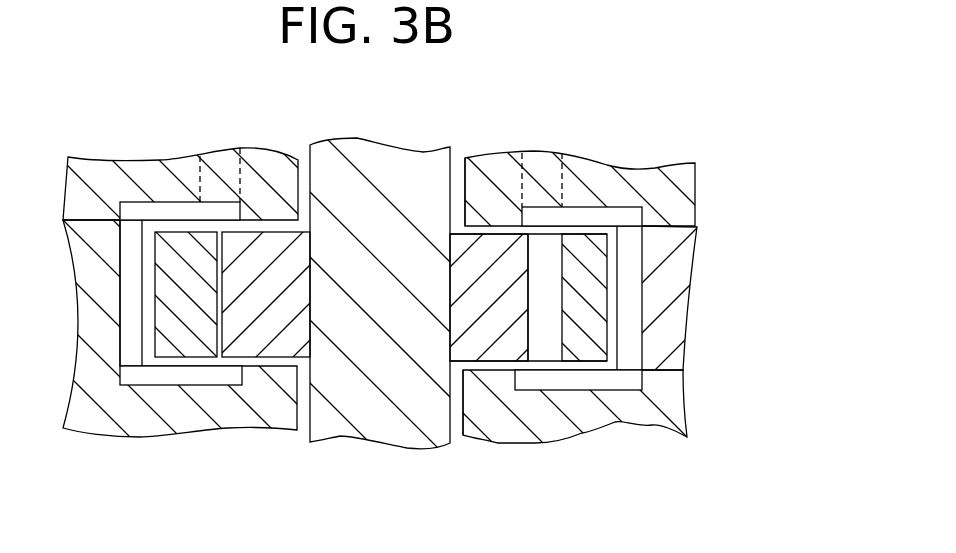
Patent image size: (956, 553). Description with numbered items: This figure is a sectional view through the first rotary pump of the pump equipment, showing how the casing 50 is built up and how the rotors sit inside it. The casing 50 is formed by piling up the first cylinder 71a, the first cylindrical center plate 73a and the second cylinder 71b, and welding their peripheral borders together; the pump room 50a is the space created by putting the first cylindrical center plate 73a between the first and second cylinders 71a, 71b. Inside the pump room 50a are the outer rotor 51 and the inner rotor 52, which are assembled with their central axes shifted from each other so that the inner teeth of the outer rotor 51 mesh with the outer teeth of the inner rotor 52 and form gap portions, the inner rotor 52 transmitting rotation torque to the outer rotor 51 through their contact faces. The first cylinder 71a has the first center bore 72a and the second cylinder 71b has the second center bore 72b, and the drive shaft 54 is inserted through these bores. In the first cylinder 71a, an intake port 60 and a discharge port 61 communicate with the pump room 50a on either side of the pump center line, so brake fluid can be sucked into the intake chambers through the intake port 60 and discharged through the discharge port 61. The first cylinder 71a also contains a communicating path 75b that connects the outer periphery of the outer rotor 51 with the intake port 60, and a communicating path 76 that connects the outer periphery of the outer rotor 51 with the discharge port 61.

The casing 50 is at (677, 446).
The pump room 50a is at (522, 365).
The outer rotor 51 is at (195, 358).
The inner rotor 52 is at (265, 337).
The drive shaft 54 is at (378, 413).
The intake port 60 is at (255, 168).
The discharge port 61 is at (513, 160).
The first cylinder 71a is at (85, 152).
The second cylinder 71b is at (115, 403).
The first center bore 72a is at (455, 168).
The second center bore 72b is at (457, 430).
The first cylindrical center plate 73a is at (652, 350).
The communicating path 75b is at (149, 200).
The communicating path 76 is at (595, 190).